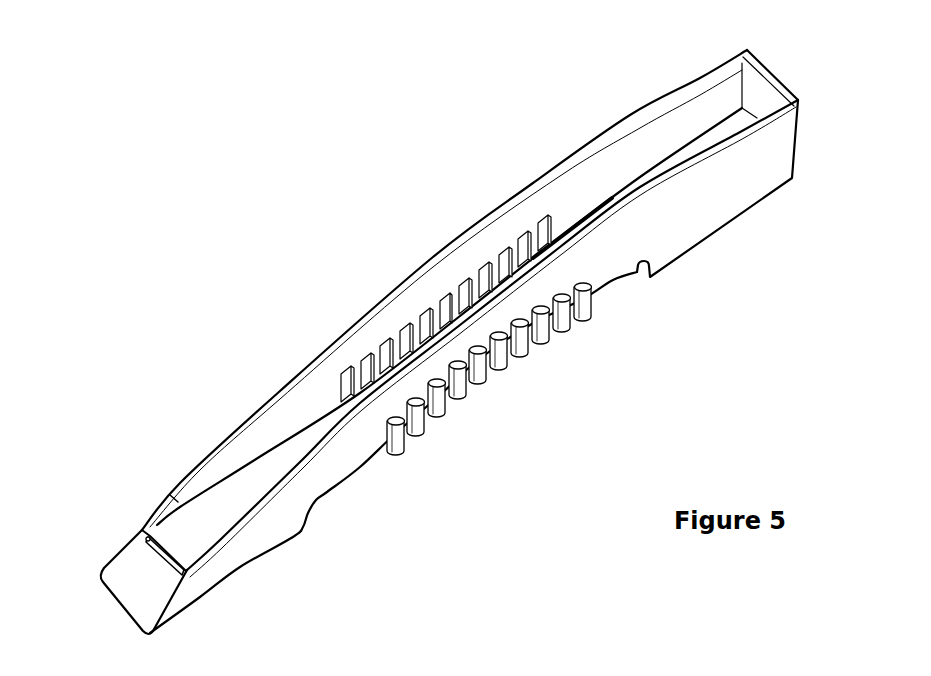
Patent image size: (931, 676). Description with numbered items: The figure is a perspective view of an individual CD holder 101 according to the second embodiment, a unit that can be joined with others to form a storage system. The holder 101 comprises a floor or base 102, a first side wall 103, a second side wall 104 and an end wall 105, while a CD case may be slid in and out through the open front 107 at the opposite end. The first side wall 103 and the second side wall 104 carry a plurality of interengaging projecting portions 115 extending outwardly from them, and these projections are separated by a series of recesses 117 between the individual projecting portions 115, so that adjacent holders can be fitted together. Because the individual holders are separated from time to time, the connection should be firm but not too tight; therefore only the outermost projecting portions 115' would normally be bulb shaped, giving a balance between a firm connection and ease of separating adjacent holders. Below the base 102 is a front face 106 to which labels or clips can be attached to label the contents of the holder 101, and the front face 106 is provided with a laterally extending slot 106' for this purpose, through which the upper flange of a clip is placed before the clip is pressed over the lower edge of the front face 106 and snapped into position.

The individual CD holder 101 is at (443, 342).
The floor or base 102 is at (253, 477).
The first side wall 103 is at (595, 175).
The second side wall 104 is at (710, 193).
The end wall 105 is at (758, 87).
The front face 106 is at (167, 603).
The laterally extending slot 106' is at (101, 549).
The open front 107 is at (178, 532).
The projecting portions 115 is at (573, 365).
The outermost projecting portions 115' is at (547, 404).
The recesses 117 is at (472, 398).